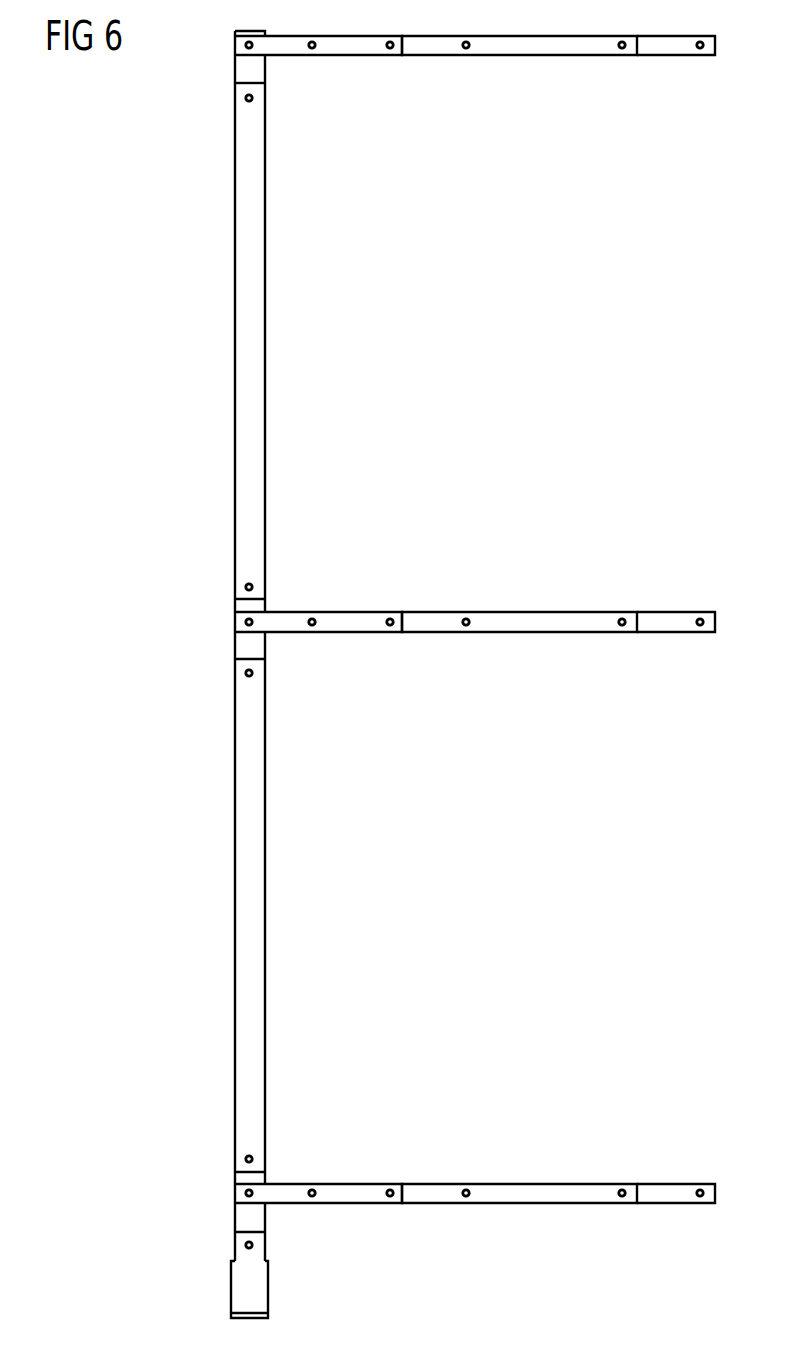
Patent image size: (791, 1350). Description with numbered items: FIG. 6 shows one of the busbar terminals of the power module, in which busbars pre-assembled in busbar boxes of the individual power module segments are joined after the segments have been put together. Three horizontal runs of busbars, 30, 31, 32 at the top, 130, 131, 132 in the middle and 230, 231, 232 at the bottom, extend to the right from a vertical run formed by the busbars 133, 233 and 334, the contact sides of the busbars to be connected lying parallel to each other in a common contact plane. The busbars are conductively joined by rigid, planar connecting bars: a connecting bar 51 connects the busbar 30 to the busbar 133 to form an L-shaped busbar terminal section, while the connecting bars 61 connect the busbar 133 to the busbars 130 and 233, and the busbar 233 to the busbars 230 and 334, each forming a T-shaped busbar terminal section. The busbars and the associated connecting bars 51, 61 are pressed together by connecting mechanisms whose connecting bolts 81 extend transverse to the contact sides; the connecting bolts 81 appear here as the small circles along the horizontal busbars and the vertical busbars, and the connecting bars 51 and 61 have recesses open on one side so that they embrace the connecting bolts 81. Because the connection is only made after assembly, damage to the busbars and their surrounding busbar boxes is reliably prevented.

The busbar 30 is at (357, 45).
The busbar 31 is at (540, 44).
The busbar 32 is at (666, 44).
The connecting bar 51 is at (245, 68).
The connecting bar 61 is at (245, 645).
The connecting bolt 81 is at (245, 98).
The busbar 130 is at (350, 622).
The busbar 131 is at (535, 620).
The busbar 132 is at (668, 620).
The busbar 133 is at (252, 322).
The busbar 230 is at (348, 1192).
The busbar 231 is at (550, 1190).
The busbar 232 is at (668, 1190).
The busbar 233 is at (252, 933).
The busbar 334 is at (260, 1295).